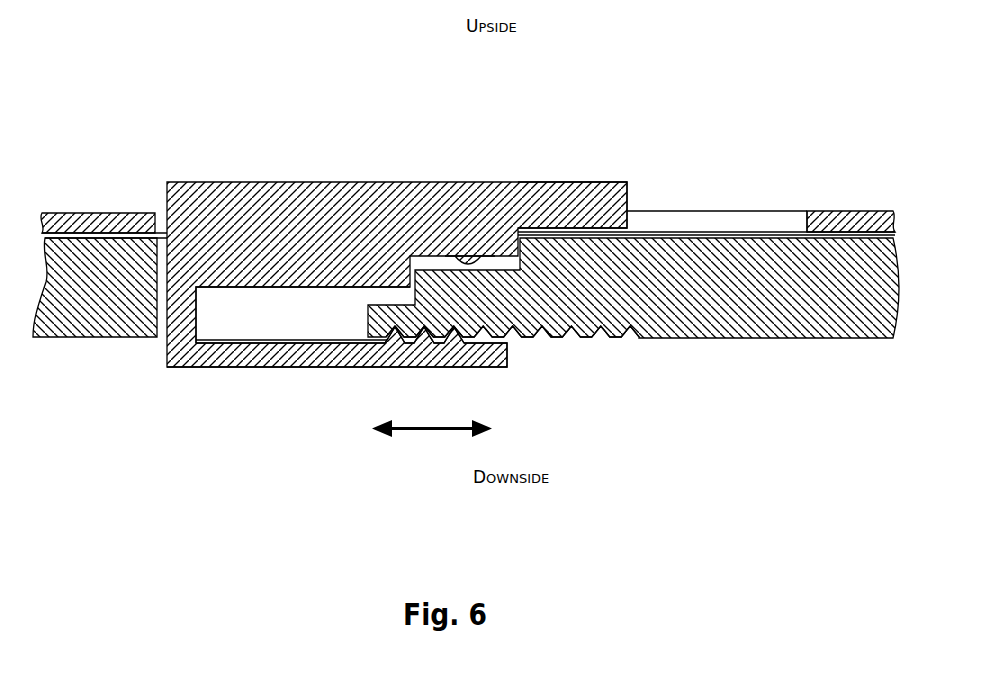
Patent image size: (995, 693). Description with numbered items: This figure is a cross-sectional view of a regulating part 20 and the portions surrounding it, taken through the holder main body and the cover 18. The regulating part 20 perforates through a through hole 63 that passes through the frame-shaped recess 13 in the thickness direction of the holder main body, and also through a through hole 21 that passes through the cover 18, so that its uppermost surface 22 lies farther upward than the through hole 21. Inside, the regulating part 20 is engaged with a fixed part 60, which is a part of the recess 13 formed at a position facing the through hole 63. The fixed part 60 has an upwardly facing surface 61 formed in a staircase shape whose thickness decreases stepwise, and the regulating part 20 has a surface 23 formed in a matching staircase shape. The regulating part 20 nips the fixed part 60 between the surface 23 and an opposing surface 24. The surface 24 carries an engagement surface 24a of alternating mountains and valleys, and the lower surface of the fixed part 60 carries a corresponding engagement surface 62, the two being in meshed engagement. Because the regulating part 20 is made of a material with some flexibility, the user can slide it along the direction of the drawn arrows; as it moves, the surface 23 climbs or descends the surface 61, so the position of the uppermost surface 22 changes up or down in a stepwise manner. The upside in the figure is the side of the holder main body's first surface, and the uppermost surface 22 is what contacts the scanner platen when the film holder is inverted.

The frame-shaped recess 13 is at (74, 323).
The cover 18 is at (80, 214).
The regulating part 20 is at (513, 197).
The through hole 21 is at (805, 222).
The uppermost surface 22 is at (592, 180).
The surface 23 is at (475, 258).
The surface 24 is at (258, 340).
The engagement surface 24a is at (443, 342).
The fixed part 60 is at (818, 320).
The upwardly facing surface 61 is at (452, 268).
The engagement surface 62 is at (583, 328).
The through hole 63 is at (232, 312).